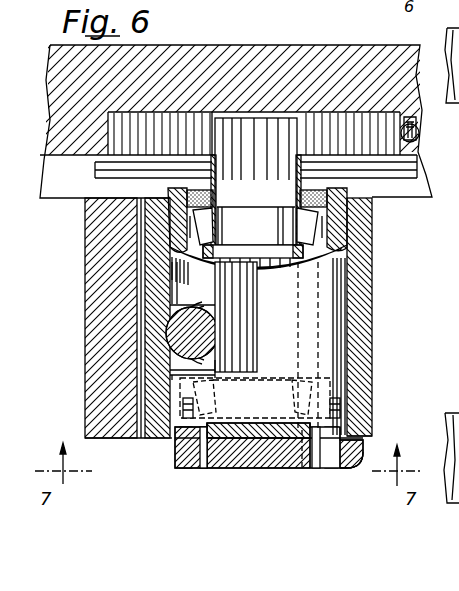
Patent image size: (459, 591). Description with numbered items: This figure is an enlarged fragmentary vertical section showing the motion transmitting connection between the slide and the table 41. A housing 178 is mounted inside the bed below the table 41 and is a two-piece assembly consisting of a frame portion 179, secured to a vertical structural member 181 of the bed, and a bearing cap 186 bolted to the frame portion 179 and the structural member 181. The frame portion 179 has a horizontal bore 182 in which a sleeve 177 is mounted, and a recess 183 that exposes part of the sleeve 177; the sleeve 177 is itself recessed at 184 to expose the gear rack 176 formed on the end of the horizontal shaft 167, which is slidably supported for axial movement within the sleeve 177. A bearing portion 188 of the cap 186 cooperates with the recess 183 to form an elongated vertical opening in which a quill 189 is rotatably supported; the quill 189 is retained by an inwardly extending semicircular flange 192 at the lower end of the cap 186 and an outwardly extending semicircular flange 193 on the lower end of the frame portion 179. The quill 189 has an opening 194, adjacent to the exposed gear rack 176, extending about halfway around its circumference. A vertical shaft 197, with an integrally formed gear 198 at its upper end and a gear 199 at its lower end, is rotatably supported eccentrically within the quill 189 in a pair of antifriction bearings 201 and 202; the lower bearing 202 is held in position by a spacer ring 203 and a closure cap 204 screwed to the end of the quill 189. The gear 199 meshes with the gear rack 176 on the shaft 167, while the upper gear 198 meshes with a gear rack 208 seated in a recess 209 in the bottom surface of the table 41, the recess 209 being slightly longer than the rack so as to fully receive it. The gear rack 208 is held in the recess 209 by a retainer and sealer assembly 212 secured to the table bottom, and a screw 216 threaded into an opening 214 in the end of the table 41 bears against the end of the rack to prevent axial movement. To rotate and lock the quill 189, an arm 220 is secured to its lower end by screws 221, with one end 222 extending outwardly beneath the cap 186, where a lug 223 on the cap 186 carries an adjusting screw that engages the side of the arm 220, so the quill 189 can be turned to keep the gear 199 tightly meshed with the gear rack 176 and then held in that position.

The table 41 is at (240, 60).
The recess 209 is at (199, 119).
The gear rack 208 is at (326, 120).
The gear 198 is at (262, 122).
The threaded opening 214 is at (412, 119).
The screw 216 is at (416, 136).
The retainer and sealer assembly 212 is at (108, 168).
The vertical shaft 197 is at (240, 186).
The antifriction bearing 201 is at (298, 226).
The quill 189 is at (340, 233).
The vertical structural member 181 is at (100, 242).
The sleeve 177 is at (163, 334).
The horizontal bore 182 is at (166, 316).
The shaft 167 is at (180, 342).
The gear rack 176 is at (222, 312).
The opening 194 is at (232, 279).
The gear 199 is at (225, 294).
The recess 184 is at (205, 372).
The recess 183 is at (222, 384).
The antifriction bearing 202 is at (292, 404).
The screws 221 is at (188, 468).
The arm 220 is at (260, 455).
The closure cap 204 is at (237, 432).
The end 222 is at (355, 453).
The lug 223 is at (348, 470).
The spacer ring 203 is at (302, 472).
The bearing portion 188 is at (340, 303).
The bearing cap 186 is at (361, 326).
The housing 178 is at (382, 374).
The semicircular flange 192 is at (373, 410).
The frame portion 179 is at (158, 440).
The semicircular flange 193 is at (173, 440).